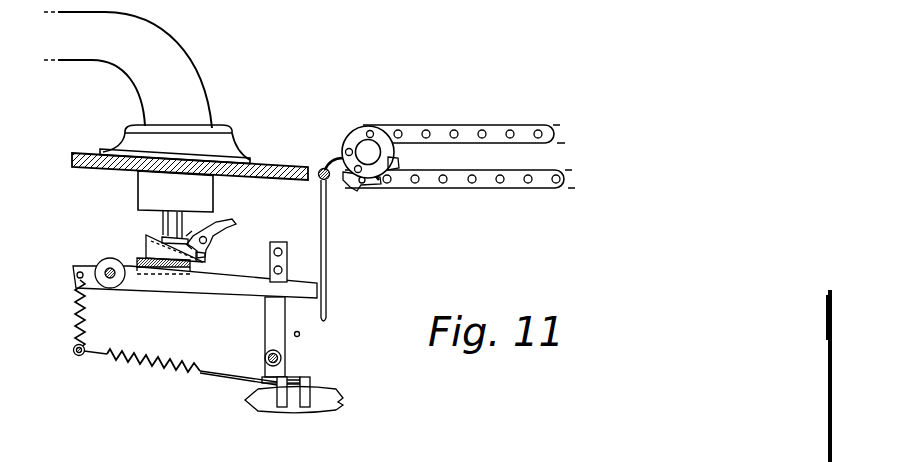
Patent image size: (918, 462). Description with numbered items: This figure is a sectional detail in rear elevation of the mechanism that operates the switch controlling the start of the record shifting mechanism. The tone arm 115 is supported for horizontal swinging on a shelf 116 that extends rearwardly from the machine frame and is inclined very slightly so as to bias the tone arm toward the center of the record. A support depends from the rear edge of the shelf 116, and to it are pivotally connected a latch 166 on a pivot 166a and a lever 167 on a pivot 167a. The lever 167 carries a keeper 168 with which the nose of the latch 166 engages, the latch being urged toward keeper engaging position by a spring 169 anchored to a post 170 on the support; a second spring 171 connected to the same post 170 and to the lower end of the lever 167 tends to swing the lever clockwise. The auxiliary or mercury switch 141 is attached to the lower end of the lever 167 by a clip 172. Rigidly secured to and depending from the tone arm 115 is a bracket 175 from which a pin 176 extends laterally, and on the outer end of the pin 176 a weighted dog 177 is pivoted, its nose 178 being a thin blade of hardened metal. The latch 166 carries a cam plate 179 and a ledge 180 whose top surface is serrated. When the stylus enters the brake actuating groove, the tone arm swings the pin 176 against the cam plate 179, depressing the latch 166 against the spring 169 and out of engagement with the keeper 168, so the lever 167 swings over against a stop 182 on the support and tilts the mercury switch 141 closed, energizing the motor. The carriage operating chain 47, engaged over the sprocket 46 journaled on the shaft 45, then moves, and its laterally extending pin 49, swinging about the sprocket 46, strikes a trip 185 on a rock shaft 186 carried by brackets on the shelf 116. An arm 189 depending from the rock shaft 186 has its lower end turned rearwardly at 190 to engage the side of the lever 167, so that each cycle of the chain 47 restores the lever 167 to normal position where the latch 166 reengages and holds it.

The tone arm 115 is at (202, 84).
The shelf 116 is at (88, 153).
The bracket 175 is at (163, 223).
The pin 176 is at (183, 233).
The weighted dog 177 is at (218, 234).
The nose 178 is at (206, 262).
The cam plate 179 is at (146, 247).
The ledge 180 is at (177, 267).
The latch 166 is at (158, 283).
The pivot of latch 166a is at (110, 281).
The keeper 168 is at (268, 279).
The lever 167 is at (266, 338).
The pivot of lever 167a is at (283, 358).
The spring 169 is at (76, 321).
The post 170 is at (75, 358).
The second spring 171 is at (174, 373).
The clip 172 is at (311, 383).
The auxiliary switch 141 is at (293, 411).
The stop 182 is at (300, 335).
The arm 189 is at (328, 246).
The rearwardly turned lower end 190 is at (325, 318).
The rock shaft 186 is at (321, 169).
The trip 185 is at (368, 190).
The shaft 45 is at (374, 150).
The sprocket 46 is at (400, 166).
The carriage operating chain 47 is at (498, 130).
The pin 49 is at (448, 187).